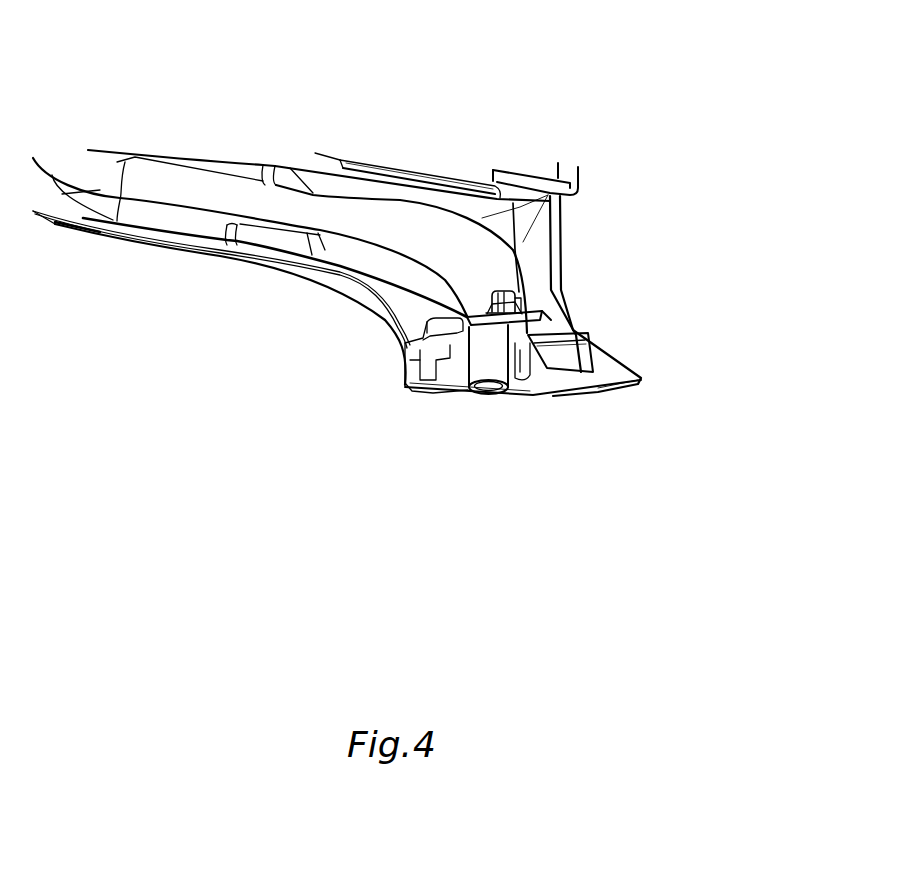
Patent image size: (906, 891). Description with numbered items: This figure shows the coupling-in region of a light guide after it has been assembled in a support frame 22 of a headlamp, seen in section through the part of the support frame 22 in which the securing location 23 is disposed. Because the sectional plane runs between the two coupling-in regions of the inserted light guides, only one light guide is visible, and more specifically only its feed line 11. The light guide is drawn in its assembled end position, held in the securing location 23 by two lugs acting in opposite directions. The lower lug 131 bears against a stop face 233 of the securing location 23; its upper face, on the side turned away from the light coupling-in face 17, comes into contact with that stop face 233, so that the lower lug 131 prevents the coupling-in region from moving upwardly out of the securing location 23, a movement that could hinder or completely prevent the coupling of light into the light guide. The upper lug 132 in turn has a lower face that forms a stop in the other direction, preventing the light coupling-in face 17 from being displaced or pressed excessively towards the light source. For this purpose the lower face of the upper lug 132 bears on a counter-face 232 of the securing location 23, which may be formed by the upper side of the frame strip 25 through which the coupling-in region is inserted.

The feed line 11 is at (181, 189).
The support frame 22 is at (520, 173).
The securing location 23 is at (592, 307).
The frame strip 25 is at (433, 398).
The light coupling-in face 17 is at (485, 398).
The lower lug 131 is at (520, 380).
The upper lug 132 is at (513, 298).
The counter-face 232 is at (522, 315).
The stop face 233 is at (525, 380).